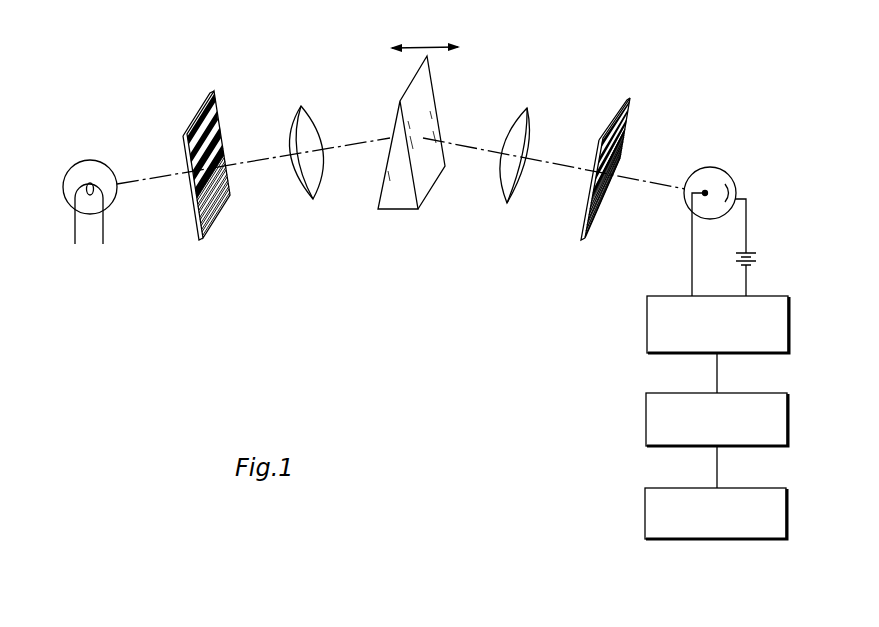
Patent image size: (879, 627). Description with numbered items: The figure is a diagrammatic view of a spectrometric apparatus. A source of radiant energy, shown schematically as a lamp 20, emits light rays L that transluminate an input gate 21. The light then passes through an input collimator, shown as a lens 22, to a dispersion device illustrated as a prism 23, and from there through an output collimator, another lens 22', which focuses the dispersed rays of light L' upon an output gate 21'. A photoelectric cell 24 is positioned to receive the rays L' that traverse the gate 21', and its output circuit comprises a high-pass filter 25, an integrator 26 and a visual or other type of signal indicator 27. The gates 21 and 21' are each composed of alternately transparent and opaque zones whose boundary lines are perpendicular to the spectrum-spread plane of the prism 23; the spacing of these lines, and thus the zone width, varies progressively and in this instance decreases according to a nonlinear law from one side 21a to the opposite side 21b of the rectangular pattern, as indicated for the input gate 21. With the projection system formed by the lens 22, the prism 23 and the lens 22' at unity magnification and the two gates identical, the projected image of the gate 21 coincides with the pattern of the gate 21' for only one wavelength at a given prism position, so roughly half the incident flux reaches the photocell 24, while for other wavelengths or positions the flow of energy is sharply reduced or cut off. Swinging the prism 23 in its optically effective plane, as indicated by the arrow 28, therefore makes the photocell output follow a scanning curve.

The lamp 20 is at (86, 160).
The input gate 21 is at (223, 165).
The one side of the rectangular pattern 21a is at (203, 107).
The opposite side of the rectangular pattern 21b is at (207, 236).
The input collimator lens 22 is at (309, 174).
The prism 23 is at (401, 204).
The output collimator lens 22' is at (519, 175).
The output gate 21' is at (610, 180).
The photoelectric cell 24 is at (728, 170).
The high-pass filter 25 is at (647, 326).
The integrator 26 is at (646, 418).
The signal indicator 27 is at (645, 507).
The arrow 28 is at (433, 45).
The light rays L is at (253, 144).
The dispersed rays of light L' is at (554, 147).